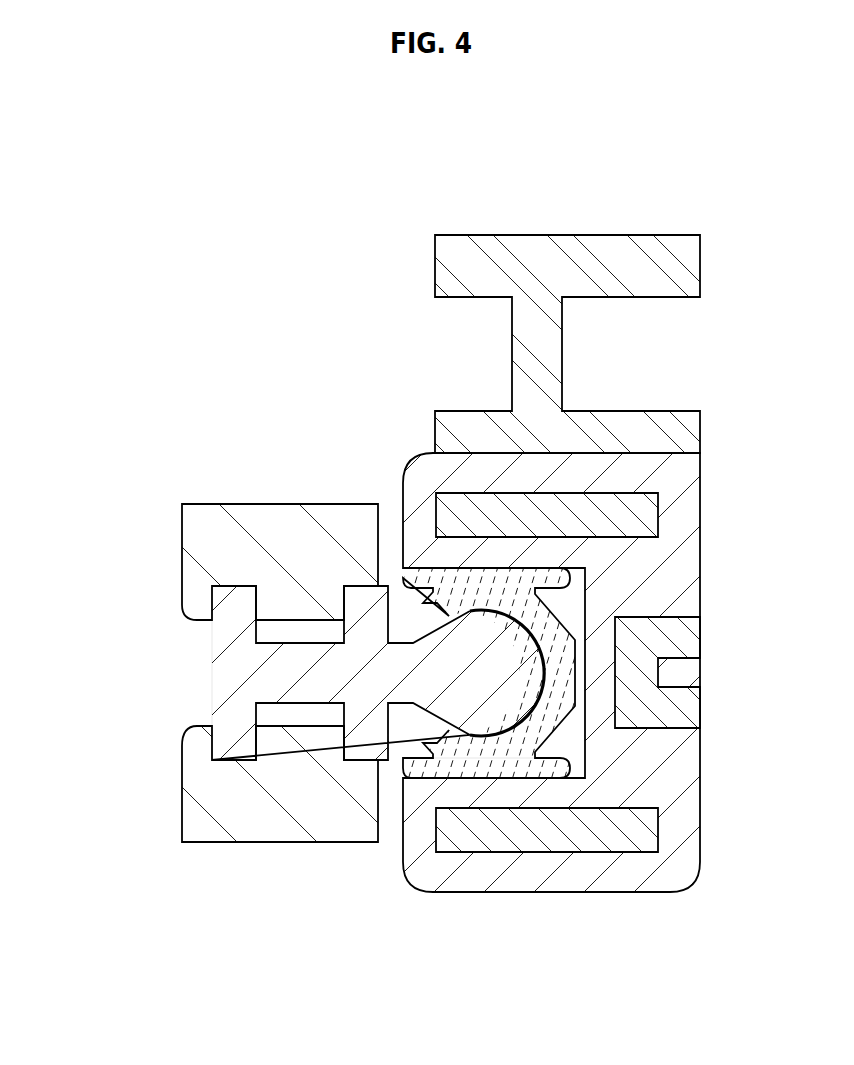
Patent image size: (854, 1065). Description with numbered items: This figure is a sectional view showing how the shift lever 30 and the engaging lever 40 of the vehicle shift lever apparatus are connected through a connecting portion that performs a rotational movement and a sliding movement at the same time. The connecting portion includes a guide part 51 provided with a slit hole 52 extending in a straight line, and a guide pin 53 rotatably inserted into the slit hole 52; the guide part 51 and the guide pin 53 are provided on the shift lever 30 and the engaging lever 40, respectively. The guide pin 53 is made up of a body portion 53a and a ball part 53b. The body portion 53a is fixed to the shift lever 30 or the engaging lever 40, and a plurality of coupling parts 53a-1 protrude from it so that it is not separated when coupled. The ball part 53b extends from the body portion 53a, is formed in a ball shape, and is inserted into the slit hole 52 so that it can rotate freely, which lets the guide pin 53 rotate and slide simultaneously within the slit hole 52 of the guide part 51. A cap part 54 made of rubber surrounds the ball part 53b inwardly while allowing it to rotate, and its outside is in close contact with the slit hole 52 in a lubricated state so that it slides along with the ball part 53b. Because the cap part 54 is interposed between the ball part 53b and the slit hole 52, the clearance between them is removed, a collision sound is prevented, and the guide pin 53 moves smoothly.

The shift lever 30 is at (612, 257).
The engaging lever 40 is at (278, 823).
The guide part 51 is at (673, 780).
The slit hole 52 is at (572, 572).
The guide pin 53 is at (344, 547).
The body portion 53a is at (298, 670).
The coupling parts 53a-1 is at (237, 713).
The ball part 53b is at (482, 687).
The cap part 54 is at (518, 755).